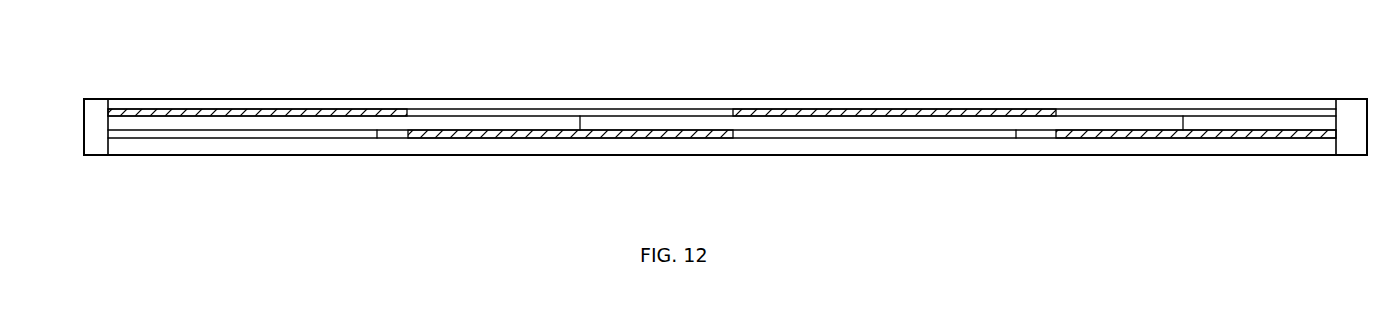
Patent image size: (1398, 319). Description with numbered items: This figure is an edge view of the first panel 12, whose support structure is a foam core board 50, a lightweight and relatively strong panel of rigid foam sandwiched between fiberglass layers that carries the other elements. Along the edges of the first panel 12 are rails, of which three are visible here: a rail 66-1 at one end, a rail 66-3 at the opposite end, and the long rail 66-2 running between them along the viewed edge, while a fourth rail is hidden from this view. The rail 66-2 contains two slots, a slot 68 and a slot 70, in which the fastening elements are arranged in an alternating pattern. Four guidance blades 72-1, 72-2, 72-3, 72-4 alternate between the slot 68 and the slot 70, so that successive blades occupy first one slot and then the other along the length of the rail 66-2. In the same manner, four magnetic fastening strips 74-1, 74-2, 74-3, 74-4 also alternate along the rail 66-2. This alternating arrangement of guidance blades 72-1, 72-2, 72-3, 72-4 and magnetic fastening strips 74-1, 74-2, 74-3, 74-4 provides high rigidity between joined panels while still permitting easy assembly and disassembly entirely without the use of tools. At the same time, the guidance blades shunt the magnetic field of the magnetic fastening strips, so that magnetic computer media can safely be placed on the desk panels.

The first panel 12 is at (800, 82).
The foam core board 50 is at (242, 253).
The rail 66-1 is at (84, 118).
The rail 66-2 is at (275, 143).
The rail 66-3 is at (1368, 113).
The slot 68 is at (620, 112).
The slot 70 is at (745, 140).
The guidance blade 72-1 is at (308, 112).
The guidance blade 72-2 is at (457, 134).
The guidance blade 72-3 is at (970, 112).
The guidance blade 72-4 is at (1118, 134).
The magnetic fastening strip 74-1 is at (377, 133).
The magnetic fastening strip 74-2 is at (580, 113).
The magnetic fastening strip 74-3 is at (1016, 137).
The magnetic fastening strip 74-4 is at (1183, 115).